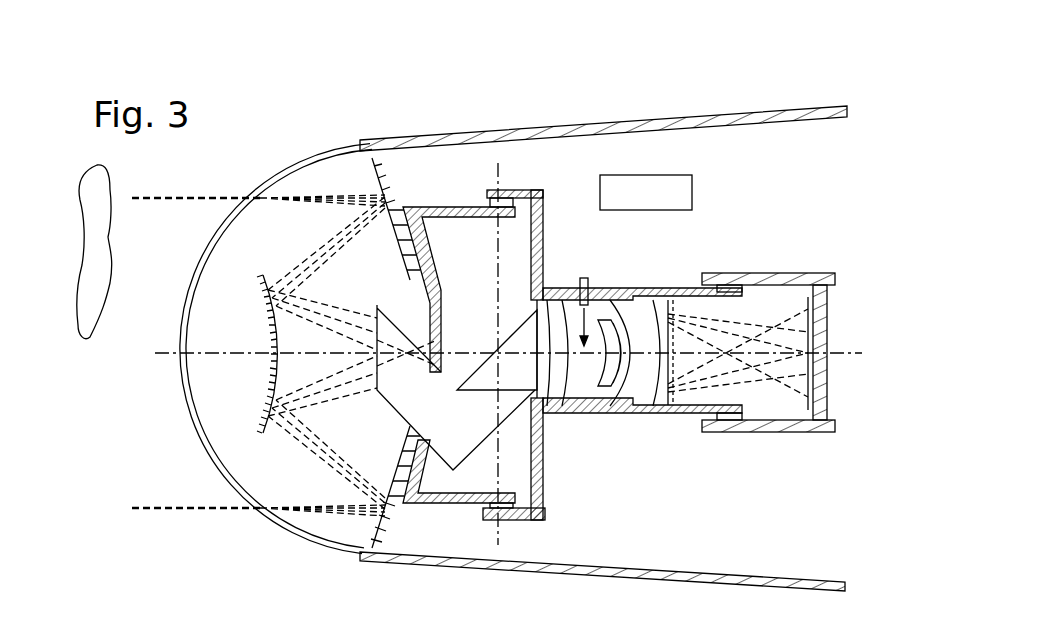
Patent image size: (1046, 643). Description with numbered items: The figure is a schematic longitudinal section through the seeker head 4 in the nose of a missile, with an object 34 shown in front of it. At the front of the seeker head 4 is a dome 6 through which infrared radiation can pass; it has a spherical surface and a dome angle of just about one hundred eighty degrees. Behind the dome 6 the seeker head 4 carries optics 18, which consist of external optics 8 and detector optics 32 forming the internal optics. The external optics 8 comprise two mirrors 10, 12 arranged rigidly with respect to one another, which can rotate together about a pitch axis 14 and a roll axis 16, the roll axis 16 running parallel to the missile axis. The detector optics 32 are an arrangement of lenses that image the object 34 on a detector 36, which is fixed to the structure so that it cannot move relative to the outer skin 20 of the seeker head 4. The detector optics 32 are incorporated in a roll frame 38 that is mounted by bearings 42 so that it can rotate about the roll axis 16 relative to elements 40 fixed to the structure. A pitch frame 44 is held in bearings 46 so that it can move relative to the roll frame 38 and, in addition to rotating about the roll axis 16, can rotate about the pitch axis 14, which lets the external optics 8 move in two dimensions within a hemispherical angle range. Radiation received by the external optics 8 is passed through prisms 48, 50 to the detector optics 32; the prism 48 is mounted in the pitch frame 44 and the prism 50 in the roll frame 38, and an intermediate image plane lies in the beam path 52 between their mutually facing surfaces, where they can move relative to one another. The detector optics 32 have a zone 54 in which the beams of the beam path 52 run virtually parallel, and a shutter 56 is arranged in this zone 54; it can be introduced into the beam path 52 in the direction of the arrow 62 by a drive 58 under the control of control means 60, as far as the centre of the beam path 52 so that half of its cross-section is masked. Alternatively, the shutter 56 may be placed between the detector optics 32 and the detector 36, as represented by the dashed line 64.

The seeker head 4 is at (603, 302).
The dome 6 is at (291, 170).
The external optics 8 is at (268, 454).
The mirror 10 is at (377, 527).
The mirror 12 is at (268, 308).
The pitch axis 14 is at (497, 257).
The roll axis 16 is at (218, 356).
The optics 18 is at (617, 369).
The outer skin 20 is at (603, 124).
The detector optics 32 is at (582, 420).
The object 34 is at (110, 180).
The detector 36 is at (806, 306).
The roll frame 38 is at (668, 415).
The elements fixed to the structure 40 is at (768, 360).
The bearings 42 is at (735, 432).
The pitch frame 44 is at (438, 208).
The bearings 46 is at (488, 194).
The prism 48 is at (462, 455).
The prism 50 is at (513, 340).
The beam path 52 is at (292, 205).
The zone 54 is at (572, 324).
The shutter 56 is at (600, 318).
The drive 58 is at (584, 280).
The control means 60 is at (680, 196).
The arrow 62 is at (583, 335).
The dashed line 64 is at (680, 290).